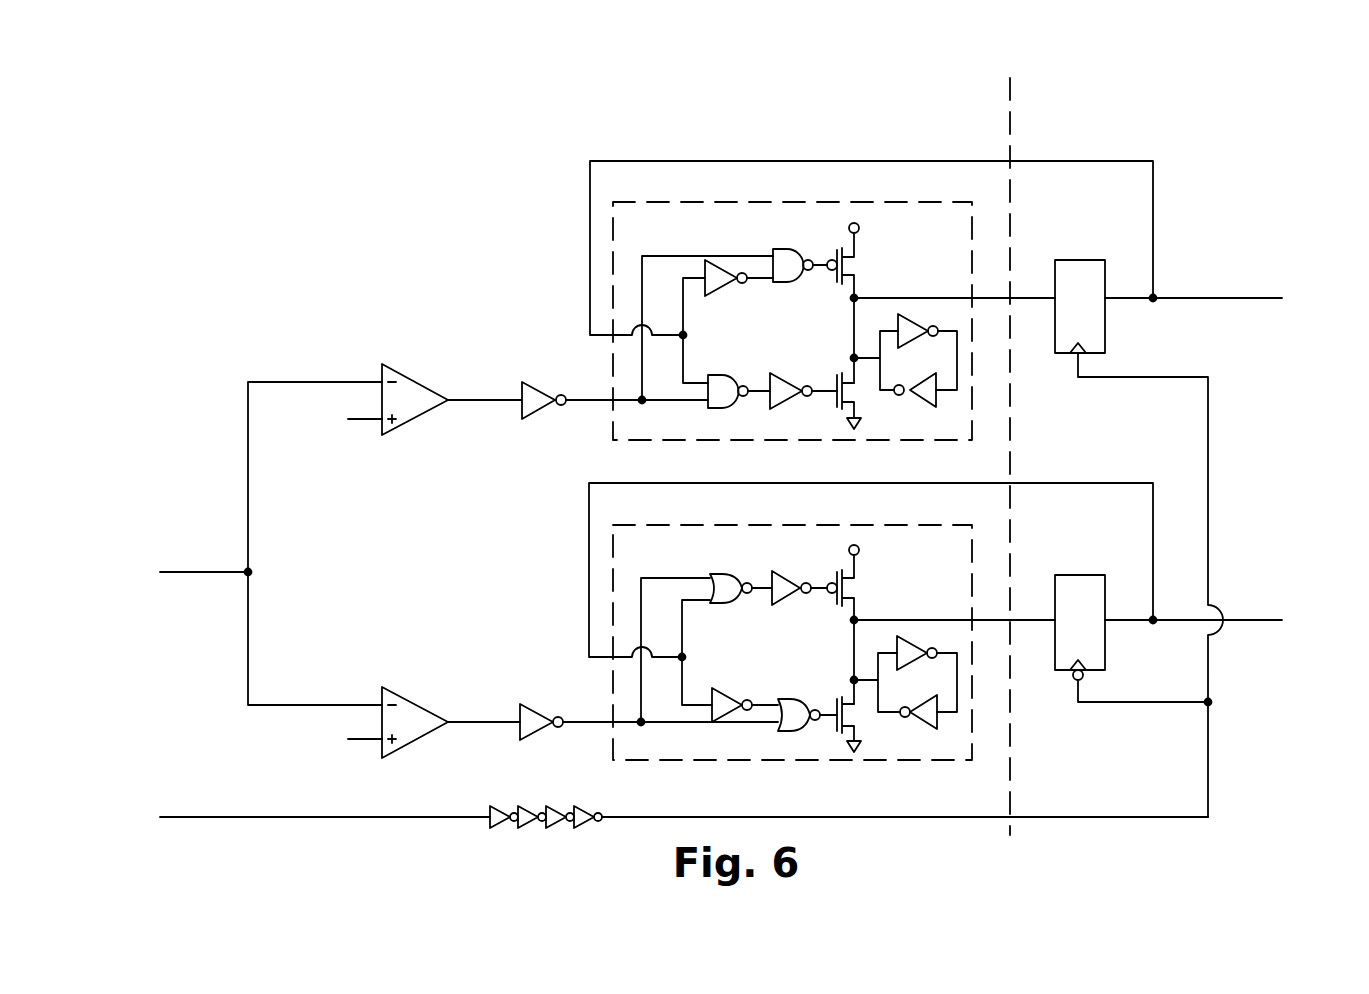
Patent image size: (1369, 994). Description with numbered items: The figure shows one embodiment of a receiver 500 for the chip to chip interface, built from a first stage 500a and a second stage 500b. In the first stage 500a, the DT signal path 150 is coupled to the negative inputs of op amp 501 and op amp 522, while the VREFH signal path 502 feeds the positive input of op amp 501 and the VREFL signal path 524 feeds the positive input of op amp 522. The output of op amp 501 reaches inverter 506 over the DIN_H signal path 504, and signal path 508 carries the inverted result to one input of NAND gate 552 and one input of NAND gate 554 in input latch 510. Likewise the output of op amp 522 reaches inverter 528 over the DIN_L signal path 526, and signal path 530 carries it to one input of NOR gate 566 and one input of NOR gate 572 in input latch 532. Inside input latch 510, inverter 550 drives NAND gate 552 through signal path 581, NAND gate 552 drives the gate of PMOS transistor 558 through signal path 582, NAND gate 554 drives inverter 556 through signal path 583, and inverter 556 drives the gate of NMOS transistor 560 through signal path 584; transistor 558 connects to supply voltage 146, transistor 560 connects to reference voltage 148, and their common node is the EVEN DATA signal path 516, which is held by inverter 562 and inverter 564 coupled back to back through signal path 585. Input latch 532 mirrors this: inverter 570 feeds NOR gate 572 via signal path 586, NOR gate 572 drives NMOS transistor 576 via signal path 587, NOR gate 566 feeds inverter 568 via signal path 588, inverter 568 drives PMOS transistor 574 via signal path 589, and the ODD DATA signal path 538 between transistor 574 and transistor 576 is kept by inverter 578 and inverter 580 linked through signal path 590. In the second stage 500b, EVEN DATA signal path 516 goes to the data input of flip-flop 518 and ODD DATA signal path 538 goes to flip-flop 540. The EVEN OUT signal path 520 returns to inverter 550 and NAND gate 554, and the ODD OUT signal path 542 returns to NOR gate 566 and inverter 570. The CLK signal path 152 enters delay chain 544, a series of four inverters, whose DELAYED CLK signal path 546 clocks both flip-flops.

The receiver 500 is at (1035, 66).
The first stage 500a is at (385, 272).
The second stage 500b is at (1240, 186).
The DT signal path 150 is at (186, 571).
The CLK signal path 152 is at (242, 816).
The supply voltage 146 is at (859, 225).
The reference voltage 148 is at (861, 429).
The op amp 501 is at (401, 373).
The VREFH signal path 502 is at (365, 420).
The DIN_H signal path 504 is at (478, 401).
The inverter 506 is at (543, 393).
The signal path 508 is at (585, 401).
The input latch 510 is at (590, 246).
The EVEN DATA signal path 516 is at (1005, 300).
The flip-flop 518 is at (1105, 342).
The EVEN OUT signal path 520 is at (1205, 297).
The op amp 522 is at (395, 693).
The VREFL signal path 524 is at (365, 740).
The DIN_L signal path 526 is at (482, 723).
The inverter 528 is at (543, 716).
The signal path 530 is at (590, 723).
The input latch 532 is at (589, 570).
The ODD DATA signal path 538 is at (1010, 619).
The flip-flop 540 is at (1105, 646).
The ODD OUT signal path 542 is at (1252, 621).
The delay chain 544 is at (488, 831).
The DELAYED CLK signal path 546 is at (1160, 818).
The inverter 550 is at (717, 267).
The NAND gate 552 is at (788, 249).
The NAND gate 554 is at (724, 375).
The inverter 556 is at (785, 381).
The transistor 558 is at (837, 250).
The transistor 560 is at (836, 375).
The inverter 562 is at (912, 321).
The inverter 564 is at (918, 396).
The NOR gate 566 is at (720, 574).
The inverter 568 is at (785, 579).
The inverter 570 is at (718, 692).
The NOR gate 572 is at (785, 732).
The transistor 574 is at (837, 573).
The transistor 576 is at (836, 699).
The inverter 578 is at (912, 644).
The inverter 580 is at (918, 717).
The signal path 581 is at (752, 279).
The signal path 582 is at (818, 269).
The signal path 583 is at (750, 400).
The signal path 584 is at (815, 392).
The signal path 585 is at (957, 358).
The signal path 586 is at (766, 703).
The signal path 587 is at (822, 718).
The signal path 588 is at (753, 589).
The signal path 589 is at (815, 589).
The signal path 590 is at (957, 680).